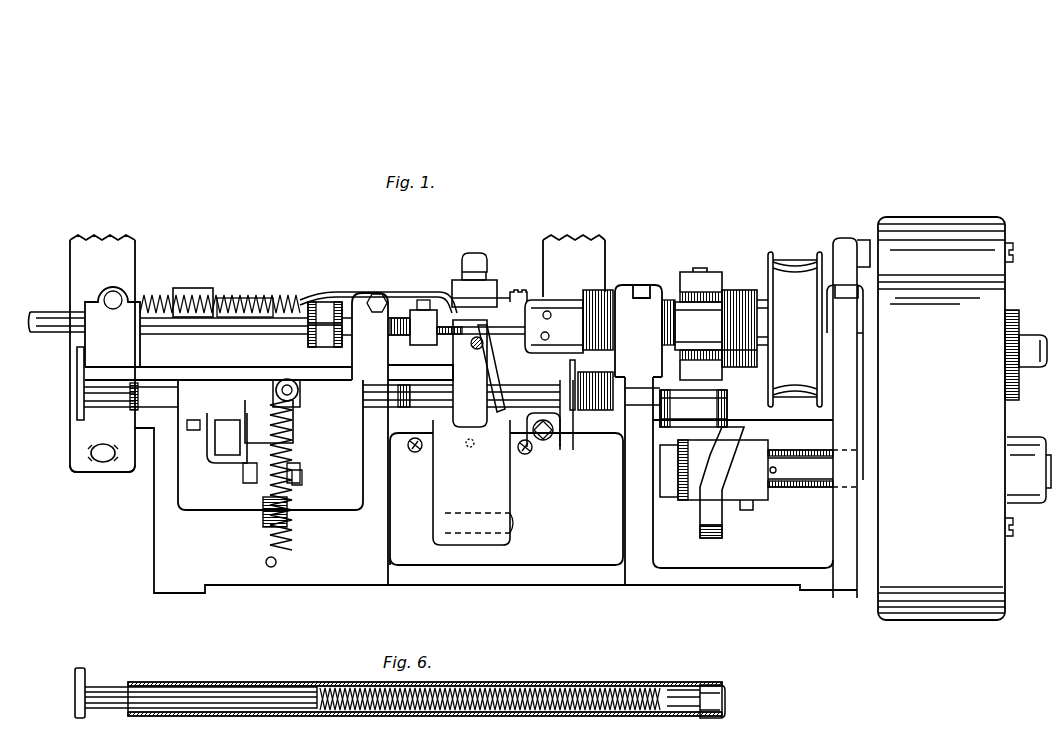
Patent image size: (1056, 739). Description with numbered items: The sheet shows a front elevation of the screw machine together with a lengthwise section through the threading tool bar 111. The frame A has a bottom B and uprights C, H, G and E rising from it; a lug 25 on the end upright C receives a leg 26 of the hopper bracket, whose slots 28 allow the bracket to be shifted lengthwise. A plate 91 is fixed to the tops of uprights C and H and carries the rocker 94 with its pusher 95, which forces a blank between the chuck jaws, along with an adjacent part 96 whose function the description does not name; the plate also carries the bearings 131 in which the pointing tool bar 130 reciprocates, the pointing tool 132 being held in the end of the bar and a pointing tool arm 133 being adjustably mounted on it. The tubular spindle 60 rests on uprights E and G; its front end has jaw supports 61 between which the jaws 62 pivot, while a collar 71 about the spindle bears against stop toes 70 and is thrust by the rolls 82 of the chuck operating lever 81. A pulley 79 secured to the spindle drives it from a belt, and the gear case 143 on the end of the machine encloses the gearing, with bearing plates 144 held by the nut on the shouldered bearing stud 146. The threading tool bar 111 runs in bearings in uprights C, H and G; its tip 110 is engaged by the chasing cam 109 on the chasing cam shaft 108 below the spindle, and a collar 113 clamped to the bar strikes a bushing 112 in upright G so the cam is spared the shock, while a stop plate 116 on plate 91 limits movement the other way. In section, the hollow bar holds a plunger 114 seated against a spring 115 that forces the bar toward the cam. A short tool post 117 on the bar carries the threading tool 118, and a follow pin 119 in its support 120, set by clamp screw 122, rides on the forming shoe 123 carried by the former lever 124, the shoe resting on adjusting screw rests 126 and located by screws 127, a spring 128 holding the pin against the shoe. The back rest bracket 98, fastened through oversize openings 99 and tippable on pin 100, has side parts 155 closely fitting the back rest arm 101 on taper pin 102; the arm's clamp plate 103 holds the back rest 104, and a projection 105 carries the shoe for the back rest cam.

In FIG. 1, the leg of the hopper bracket 26 is at (129, 261).
In FIG. 1, the frame A is at (325, 586).
In FIG. 1, the bottom B is at (742, 589).
In FIG. 1, the end upright C is at (155, 500).
In FIG. 1, the end upright E is at (838, 540).
In FIG. 1, the upright G is at (647, 545).
In FIG. 1, the intermediate upright H is at (375, 498).
In FIG. 1, the lug 25 is at (137, 471).
In FIG. 1, the slot 28 is at (90, 455).
In FIG. 1, the pointing tool bar 130 is at (50, 312).
In FIG. 1, the bearing 131 is at (98, 341).
In FIG. 1, the plate 91 is at (145, 356).
In FIG. 1, the stop plate 116 is at (80, 399).
In FIG. 6, the stop plate 116 is at (88, 674).
In FIG. 1, the rocker 94 is at (200, 289).
In FIG. 1, the spring 96 is at (220, 300).
In FIG. 1, the pointing tool arm 133 is at (301, 302).
In FIG. 1, the pusher 95 is at (350, 291).
In FIG. 1, the follow pin 119 is at (313, 381).
In FIG. 1, the pointing tool 132 is at (430, 306).
In FIG. 1, the clamp plate 103 is at (486, 298).
In FIG. 1, the projection 105 is at (483, 261).
In FIG. 1, the jaw 62 is at (518, 291).
In FIG. 1, the jaw support 61 is at (558, 301).
In FIG. 1, the back rest 104 is at (549, 318).
In FIG. 1, the bushing 112 is at (603, 425).
In FIG. 1, the spindle 60 is at (712, 310).
In FIG. 1, the chuck operating lever 81 is at (715, 272).
In FIG. 1, the roll 82 is at (681, 296).
In FIG. 1, the collar 71 is at (752, 290).
In FIG. 1, the stop toe 70 is at (762, 352).
In FIG. 1, the pulley 79 is at (792, 257).
In FIG. 1, the gear case 143 is at (950, 618).
In FIG. 1, the bearing stud 146 is at (1030, 349).
In FIG. 1, the bearing plate 144 is at (1012, 400).
In FIG. 1, the threading tool bar 111 is at (510, 398).
In FIG. 6, the threading tool bar 111 is at (208, 686).
In FIG. 1, the follow pin support 120 is at (279, 380).
In FIG. 1, the clamp screw 122 is at (266, 437).
In FIG. 1, the forming shoe 123 is at (240, 442).
In FIG. 1, the screw 127 is at (204, 432).
In FIG. 1, the former lever 124 is at (268, 503).
In FIG. 1, the spring 128 is at (266, 546).
In FIG. 1, the adjusting screw rest 126 is at (300, 478).
In FIG. 1, the back rest bracket 98 is at (526, 476).
In FIG. 1, the tool post 117 is at (458, 386).
In FIG. 1, the threading tool 118 is at (505, 401).
In FIG. 1, the back rest arm 101 is at (460, 494).
In FIG. 1, the taper pin 102 is at (513, 529).
In FIG. 1, the pin 100 is at (471, 450).
In FIG. 1, the side part 155 is at (438, 454).
In FIG. 1, the opening 99 is at (532, 452).
In FIG. 1, the collar 113 is at (560, 440).
In FIG. 1, the tip 110 is at (722, 401).
In FIG. 6, the tip 110 is at (722, 688).
In FIG. 1, the chasing cam 109 is at (724, 539).
In FIG. 1, the chasing cam shaft 108 is at (800, 481).
In FIG. 6, the plunger 114 is at (276, 696).
In FIG. 6, the spring 115 is at (566, 697).